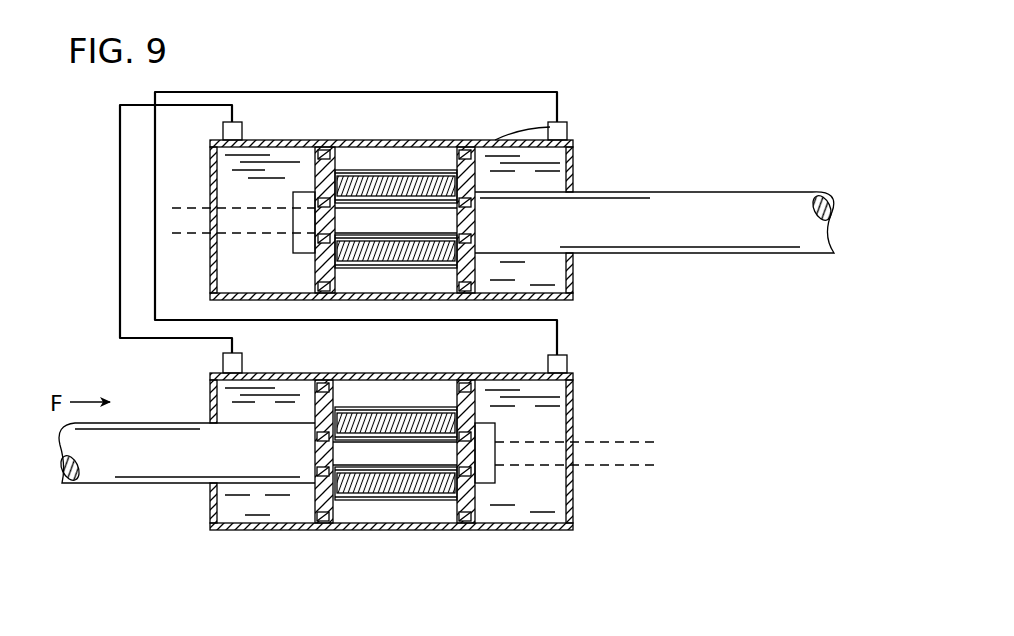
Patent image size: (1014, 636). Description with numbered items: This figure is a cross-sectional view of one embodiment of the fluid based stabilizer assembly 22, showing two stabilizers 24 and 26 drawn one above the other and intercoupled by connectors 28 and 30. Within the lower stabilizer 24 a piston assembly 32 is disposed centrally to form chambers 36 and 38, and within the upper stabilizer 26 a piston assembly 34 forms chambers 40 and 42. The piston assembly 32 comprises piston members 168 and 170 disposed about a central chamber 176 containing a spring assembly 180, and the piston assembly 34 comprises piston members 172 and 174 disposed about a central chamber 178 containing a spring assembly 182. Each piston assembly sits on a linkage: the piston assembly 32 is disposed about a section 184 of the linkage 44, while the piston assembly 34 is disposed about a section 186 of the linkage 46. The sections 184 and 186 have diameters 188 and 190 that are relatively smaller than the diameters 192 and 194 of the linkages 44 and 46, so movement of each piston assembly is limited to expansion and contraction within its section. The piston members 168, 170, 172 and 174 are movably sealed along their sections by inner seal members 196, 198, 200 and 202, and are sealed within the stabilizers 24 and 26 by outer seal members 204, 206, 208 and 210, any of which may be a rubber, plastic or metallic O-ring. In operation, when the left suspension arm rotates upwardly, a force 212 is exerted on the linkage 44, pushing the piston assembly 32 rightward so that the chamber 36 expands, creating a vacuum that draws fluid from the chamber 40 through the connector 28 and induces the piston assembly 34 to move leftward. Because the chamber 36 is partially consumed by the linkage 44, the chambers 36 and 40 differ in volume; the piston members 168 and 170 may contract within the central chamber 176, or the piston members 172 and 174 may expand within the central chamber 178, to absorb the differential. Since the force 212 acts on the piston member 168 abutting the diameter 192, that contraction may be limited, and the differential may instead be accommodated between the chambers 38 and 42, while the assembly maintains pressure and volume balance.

The stabilizer assembly 22 is at (630, 68).
The stabilizer 24 is at (620, 540).
The stabilizer 26 is at (714, 126).
The connector 28 is at (120, 237).
The connector 30 is at (155, 190).
The piston assembly 32 is at (388, 362).
The piston assembly 34 is at (450, 128).
The chamber 36 is at (318, 563).
The chamber 38 is at (565, 548).
The chamber 40 is at (322, 87).
The chamber 42 is at (567, 87).
The linkage 44 is at (122, 483).
The linkage 46 is at (778, 192).
The piston member 168 is at (336, 380).
The piston member 170 is at (433, 377).
The piston member 172 is at (352, 168).
The piston member 174 is at (446, 148).
The central chamber 176 is at (345, 532).
The central chamber 178 is at (403, 165).
The spring assembly 180 is at (428, 520).
The spring assembly 182 is at (396, 170).
The section 184 is at (463, 548).
The section 186 is at (465, 87).
The diameter 188 is at (647, 412).
The diameter 190 is at (188, 262).
The diameter 192 is at (140, 512).
The diameter 194 is at (600, 165).
The inner seal member 196 is at (315, 437).
The inner seal member 198 is at (468, 437).
The inner seal member 200 is at (312, 203).
The inner seal member 202 is at (468, 203).
The outer seal member 204 is at (315, 532).
The outer seal member 206 is at (462, 524).
The outer seal member 208 is at (320, 145).
The outer seal member 210 is at (566, 128).
The force 212 is at (92, 398).